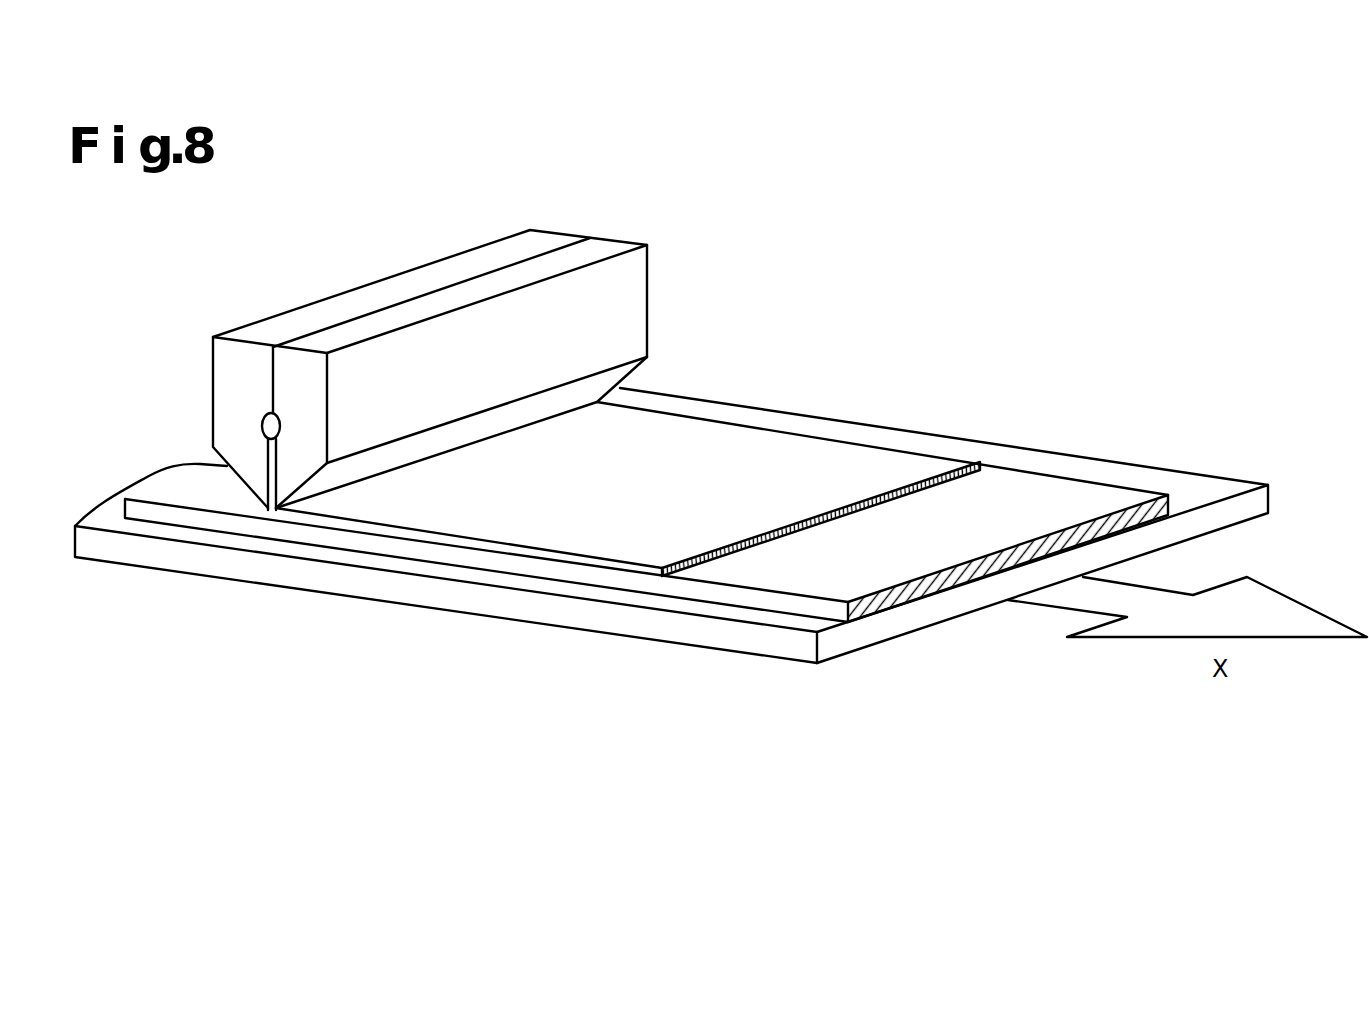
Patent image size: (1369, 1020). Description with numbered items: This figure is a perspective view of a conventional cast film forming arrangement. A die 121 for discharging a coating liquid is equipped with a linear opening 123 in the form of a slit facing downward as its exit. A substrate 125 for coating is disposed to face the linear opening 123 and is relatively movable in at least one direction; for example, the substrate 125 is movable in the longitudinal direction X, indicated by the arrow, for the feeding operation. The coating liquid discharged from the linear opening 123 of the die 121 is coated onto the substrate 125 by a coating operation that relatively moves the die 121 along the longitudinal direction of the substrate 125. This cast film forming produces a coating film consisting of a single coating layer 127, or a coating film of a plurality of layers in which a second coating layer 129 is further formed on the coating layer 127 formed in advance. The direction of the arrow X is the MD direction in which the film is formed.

The die 121 is at (632, 327).
The linear opening 123 is at (270, 512).
The substrate for coating 125 is at (1192, 487).
The coating layer 127 is at (1027, 488).
The second coating layer 129 is at (863, 457).